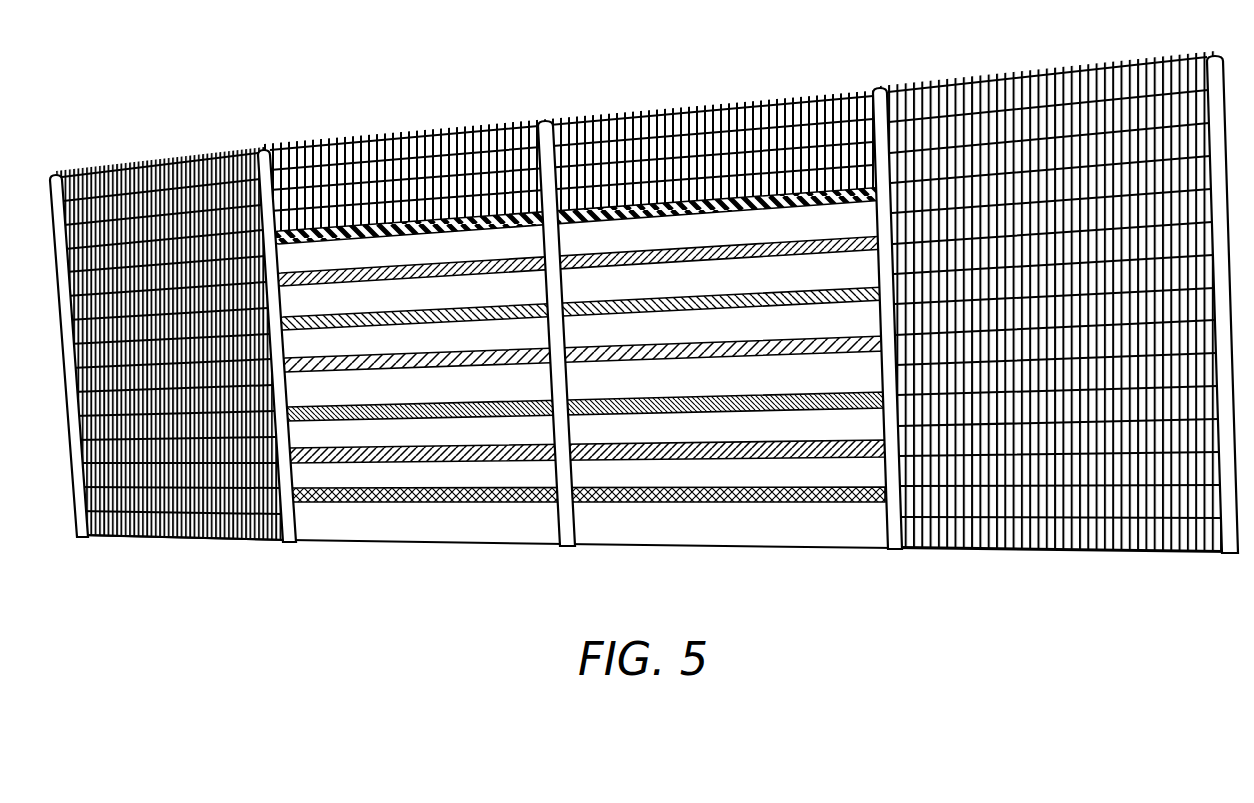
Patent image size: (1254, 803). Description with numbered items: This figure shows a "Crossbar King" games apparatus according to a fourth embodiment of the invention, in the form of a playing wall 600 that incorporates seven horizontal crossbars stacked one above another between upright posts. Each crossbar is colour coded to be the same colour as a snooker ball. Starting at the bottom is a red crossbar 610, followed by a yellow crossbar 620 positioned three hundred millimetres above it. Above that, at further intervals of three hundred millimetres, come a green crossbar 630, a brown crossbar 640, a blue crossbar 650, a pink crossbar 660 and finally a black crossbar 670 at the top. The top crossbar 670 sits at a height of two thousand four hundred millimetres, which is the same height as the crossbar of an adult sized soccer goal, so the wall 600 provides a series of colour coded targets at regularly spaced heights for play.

The playing wall 600 is at (644, 296).
The red crossbar 610 is at (818, 504).
The yellow crossbar 620 is at (815, 459).
The green crossbar 630 is at (812, 410).
The brown crossbar 640 is at (805, 354).
The blue crossbar 650 is at (803, 303).
The pink crossbar 660 is at (795, 252).
The black crossbar 670 is at (795, 203).